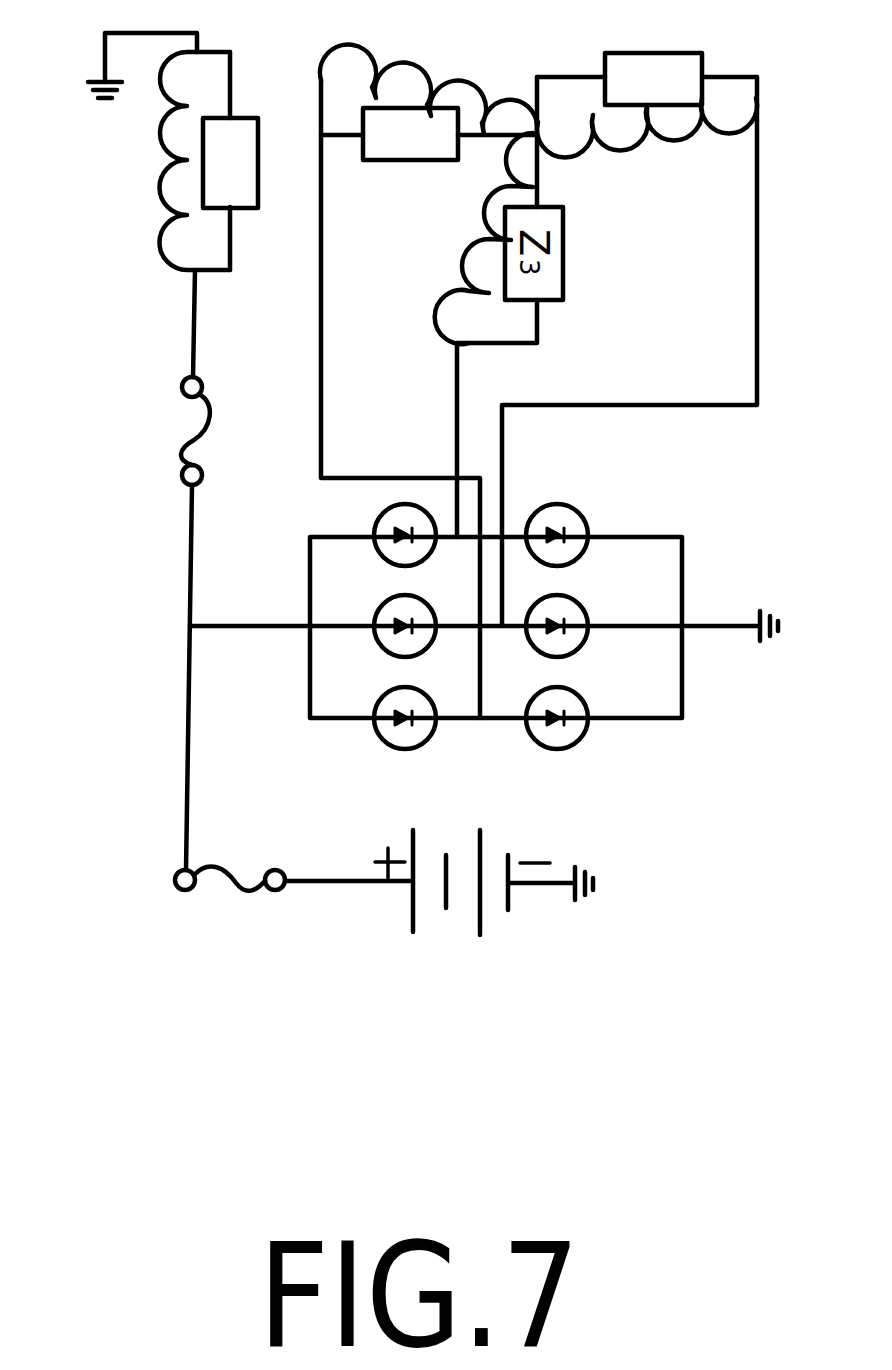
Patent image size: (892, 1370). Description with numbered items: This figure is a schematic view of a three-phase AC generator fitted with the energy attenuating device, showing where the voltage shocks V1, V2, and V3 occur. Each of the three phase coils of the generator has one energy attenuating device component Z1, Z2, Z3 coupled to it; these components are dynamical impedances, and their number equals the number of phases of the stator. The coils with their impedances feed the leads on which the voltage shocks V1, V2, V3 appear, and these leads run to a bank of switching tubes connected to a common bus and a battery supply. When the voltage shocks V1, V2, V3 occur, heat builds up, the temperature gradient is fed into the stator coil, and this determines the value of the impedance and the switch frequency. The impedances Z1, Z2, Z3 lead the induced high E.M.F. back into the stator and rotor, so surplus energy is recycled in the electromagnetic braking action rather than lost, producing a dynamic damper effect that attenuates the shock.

The energy attenuating device component Z1 is at (410, 136).
The energy attenuating device component Z2 is at (653, 81).
The energy attenuating device component Z3 is at (230, 163).
The voltage shock V1 is at (426, 440).
The voltage shock V2 is at (400, 399).
The voltage shock V3 is at (629, 351).